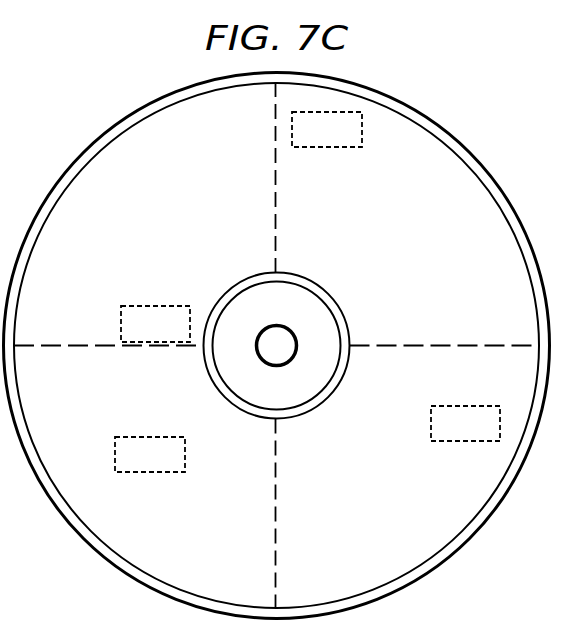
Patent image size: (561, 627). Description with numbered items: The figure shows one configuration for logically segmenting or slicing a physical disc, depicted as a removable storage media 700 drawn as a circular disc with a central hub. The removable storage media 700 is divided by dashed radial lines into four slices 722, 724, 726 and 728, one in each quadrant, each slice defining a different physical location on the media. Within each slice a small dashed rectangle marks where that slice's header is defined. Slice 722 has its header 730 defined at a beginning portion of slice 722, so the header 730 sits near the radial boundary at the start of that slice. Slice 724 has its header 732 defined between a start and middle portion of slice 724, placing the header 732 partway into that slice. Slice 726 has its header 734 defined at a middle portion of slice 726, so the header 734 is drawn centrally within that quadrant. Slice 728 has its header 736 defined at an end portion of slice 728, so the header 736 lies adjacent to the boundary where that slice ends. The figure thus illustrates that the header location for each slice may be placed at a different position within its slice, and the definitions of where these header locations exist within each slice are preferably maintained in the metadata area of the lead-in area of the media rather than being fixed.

The removable storage media 700 is at (82, 95).
The slice 722 is at (443, 270).
The slice 724 is at (388, 533).
The slice 726 is at (207, 533).
The slice 728 is at (198, 192).
The header 730 is at (325, 147).
The header 732 is at (431, 428).
The header 734 is at (185, 458).
The header 736 is at (121, 318).